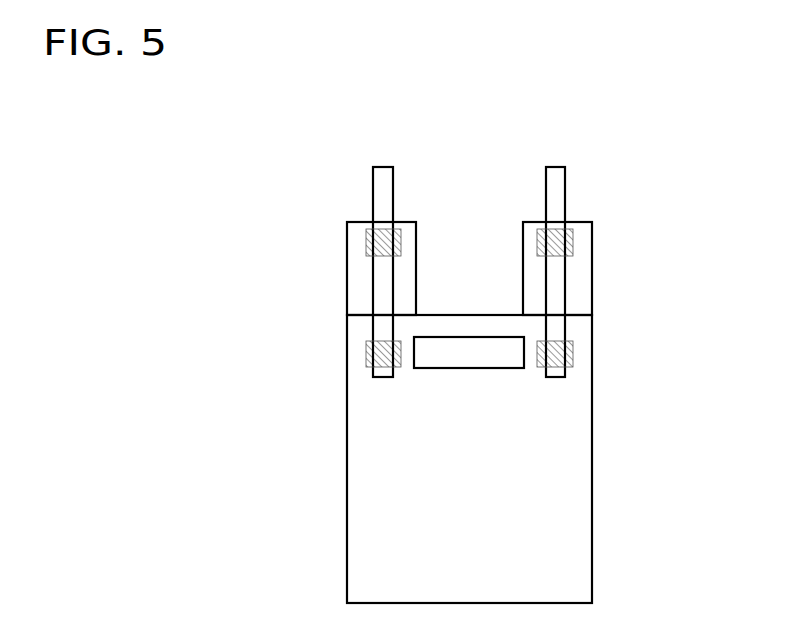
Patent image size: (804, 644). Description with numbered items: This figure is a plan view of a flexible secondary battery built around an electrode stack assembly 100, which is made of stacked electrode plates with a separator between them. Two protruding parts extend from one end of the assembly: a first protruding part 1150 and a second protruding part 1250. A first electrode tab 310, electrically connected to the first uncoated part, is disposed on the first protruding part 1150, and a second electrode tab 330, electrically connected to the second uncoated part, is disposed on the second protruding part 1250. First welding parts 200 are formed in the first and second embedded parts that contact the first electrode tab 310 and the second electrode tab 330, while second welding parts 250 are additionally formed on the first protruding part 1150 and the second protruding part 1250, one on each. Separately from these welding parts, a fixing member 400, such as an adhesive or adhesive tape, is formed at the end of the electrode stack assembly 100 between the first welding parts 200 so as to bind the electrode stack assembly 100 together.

The electrode stack assembly 100 is at (580, 417).
The first protruding part 1150 is at (358, 300).
The second protruding part 1250 is at (580, 303).
The first electrode tab 310 is at (383, 183).
The second electrode tab 330 is at (553, 183).
The second welding part 250 is at (375, 236).
The first welding part 200 is at (375, 350).
The fixing member 400 is at (466, 350).